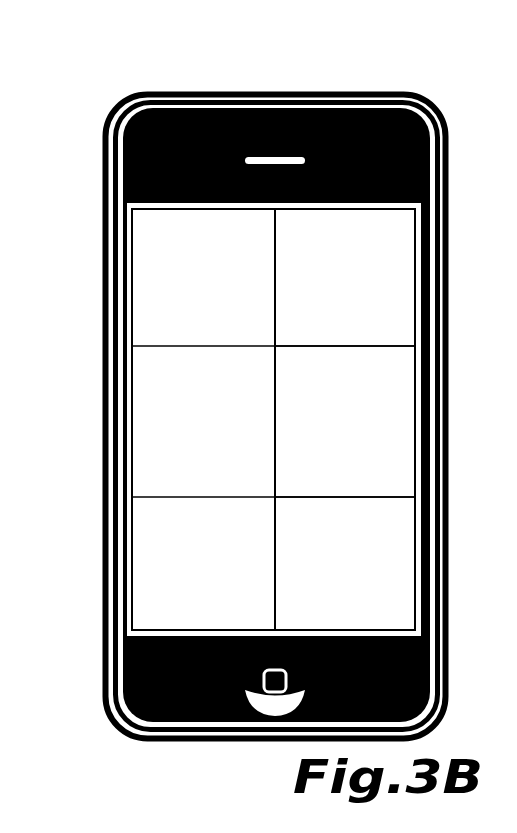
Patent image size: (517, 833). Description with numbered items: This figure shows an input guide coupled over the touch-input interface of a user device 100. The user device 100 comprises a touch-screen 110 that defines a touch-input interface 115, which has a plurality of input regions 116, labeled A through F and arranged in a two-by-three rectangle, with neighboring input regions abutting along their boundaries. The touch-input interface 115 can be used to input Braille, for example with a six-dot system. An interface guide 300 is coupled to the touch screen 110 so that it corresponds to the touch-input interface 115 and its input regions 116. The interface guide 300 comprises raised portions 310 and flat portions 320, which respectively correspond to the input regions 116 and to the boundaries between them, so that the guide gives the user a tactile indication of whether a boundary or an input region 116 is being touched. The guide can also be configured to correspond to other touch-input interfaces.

The user device 100 is at (272, 376).
The touch-screen 110 is at (306, 419).
The touch-input interface 115 is at (397, 378).
The input regions 116 is at (397, 420).
The interface guide 300 is at (129, 417).
The raised portions 310 is at (275, 467).
The flat portions 320 is at (516, 530).